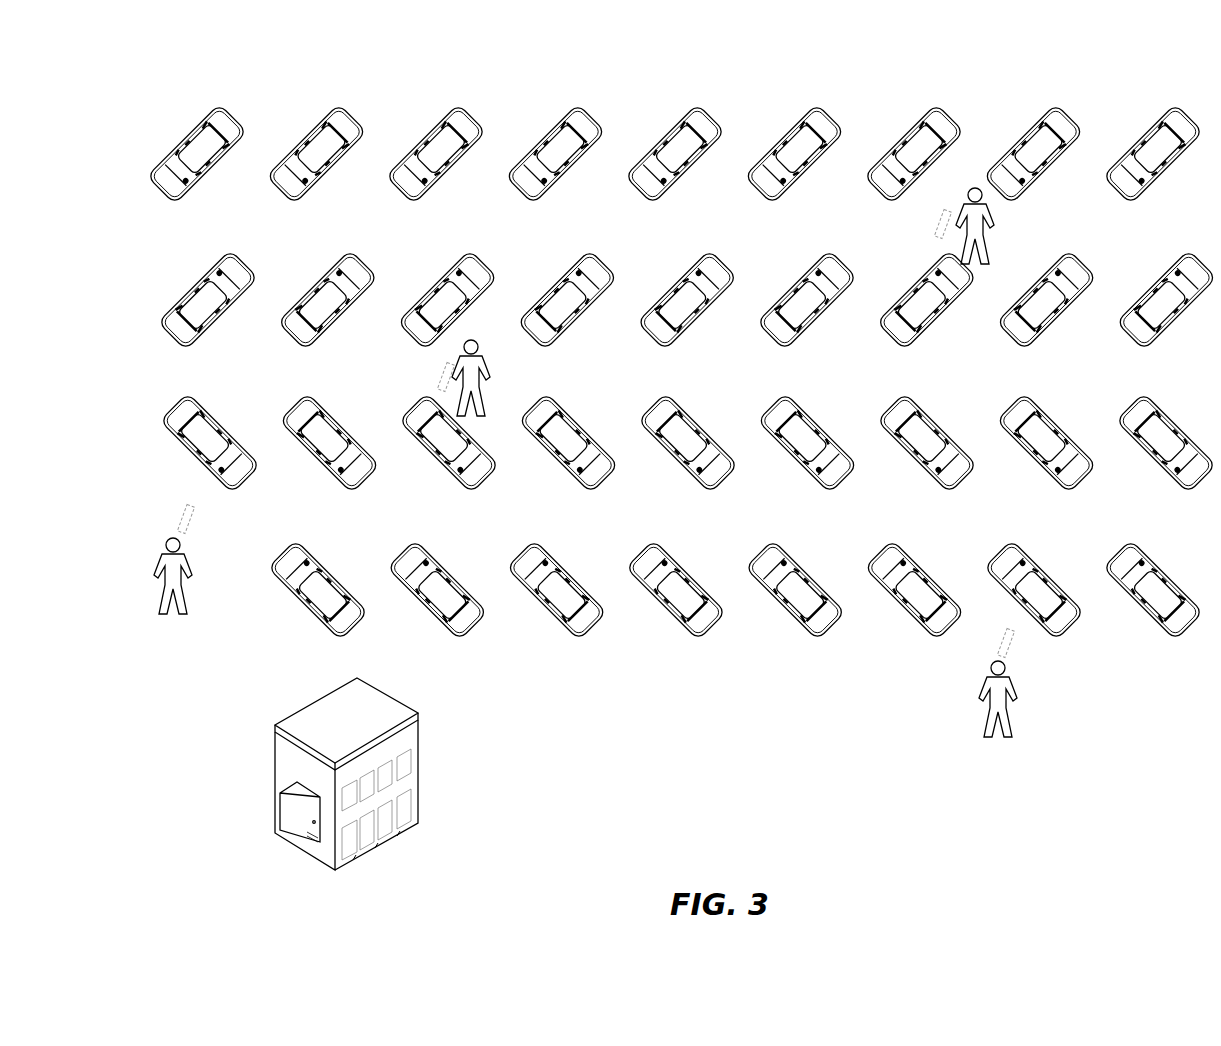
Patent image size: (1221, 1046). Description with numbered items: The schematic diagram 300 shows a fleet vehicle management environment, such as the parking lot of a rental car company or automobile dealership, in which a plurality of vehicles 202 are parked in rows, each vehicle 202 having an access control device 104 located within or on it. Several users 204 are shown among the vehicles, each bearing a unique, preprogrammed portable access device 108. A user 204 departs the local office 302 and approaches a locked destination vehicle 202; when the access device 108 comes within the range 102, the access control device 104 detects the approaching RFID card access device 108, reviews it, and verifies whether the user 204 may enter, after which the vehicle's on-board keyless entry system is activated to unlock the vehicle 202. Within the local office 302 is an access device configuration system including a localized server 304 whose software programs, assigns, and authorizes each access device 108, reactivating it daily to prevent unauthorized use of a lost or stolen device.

The schematic diagram 300 is at (646, 76).
The range 102 is at (626, 370).
The access control device 104 is at (905, 182).
The portable access device 108 is at (584, 462).
The vehicle 202 is at (947, 113).
The user 204 is at (988, 206).
The local office 302 is at (317, 772).
The localized server 304 is at (288, 813).